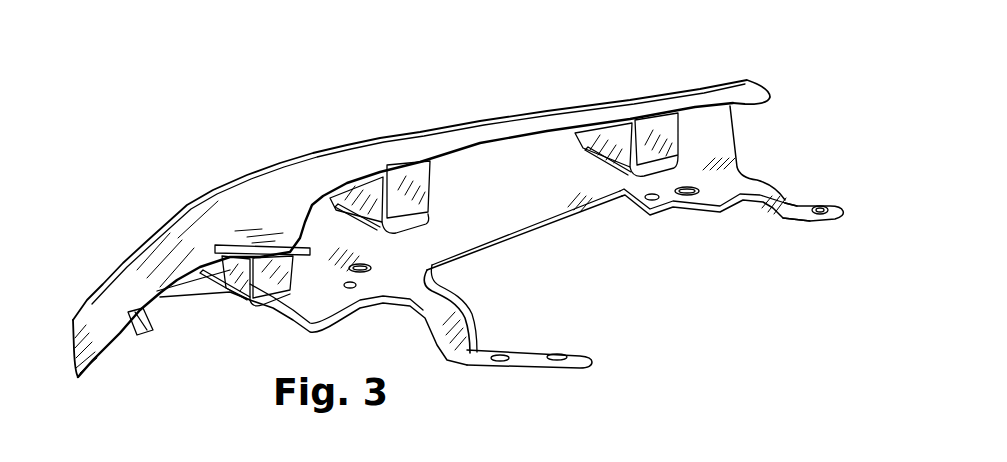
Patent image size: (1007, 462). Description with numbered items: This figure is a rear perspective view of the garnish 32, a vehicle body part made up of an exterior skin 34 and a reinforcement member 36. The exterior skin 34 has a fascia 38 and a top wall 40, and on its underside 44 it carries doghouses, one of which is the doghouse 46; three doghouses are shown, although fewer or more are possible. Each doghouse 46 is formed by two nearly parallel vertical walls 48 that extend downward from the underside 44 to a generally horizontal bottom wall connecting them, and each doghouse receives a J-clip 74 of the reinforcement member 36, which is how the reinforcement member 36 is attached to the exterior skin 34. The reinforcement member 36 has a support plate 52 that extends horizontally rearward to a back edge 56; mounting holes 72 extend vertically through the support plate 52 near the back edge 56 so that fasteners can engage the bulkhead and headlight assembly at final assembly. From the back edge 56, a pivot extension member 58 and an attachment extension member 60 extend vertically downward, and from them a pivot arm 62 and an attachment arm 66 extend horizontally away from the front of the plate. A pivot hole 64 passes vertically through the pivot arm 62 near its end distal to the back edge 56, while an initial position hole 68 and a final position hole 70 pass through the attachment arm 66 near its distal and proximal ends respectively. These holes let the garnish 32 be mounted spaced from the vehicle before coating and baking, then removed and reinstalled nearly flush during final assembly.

The garnish 32 is at (192, 108).
The exterior skin 34 is at (97, 328).
The reinforcement member 36 is at (557, 183).
The fascia 38 is at (133, 272).
The top wall 40 is at (219, 230).
The underside 44 is at (457, 172).
The doghouse 46 is at (423, 249).
The vertical walls 48 is at (353, 198).
The support plate 52 is at (597, 200).
The back edge 56 is at (547, 243).
The pivot extension member 58 is at (785, 202).
The attachment extension member 60 is at (450, 335).
The pivot arm 62 is at (797, 209).
The pivot hole 64 is at (823, 207).
The attachment arm 66 is at (522, 366).
The initial position hole 68 is at (560, 363).
The final position hole 70 is at (495, 361).
The mounting holes 72 is at (362, 271).
The J-clips 74 is at (393, 208).